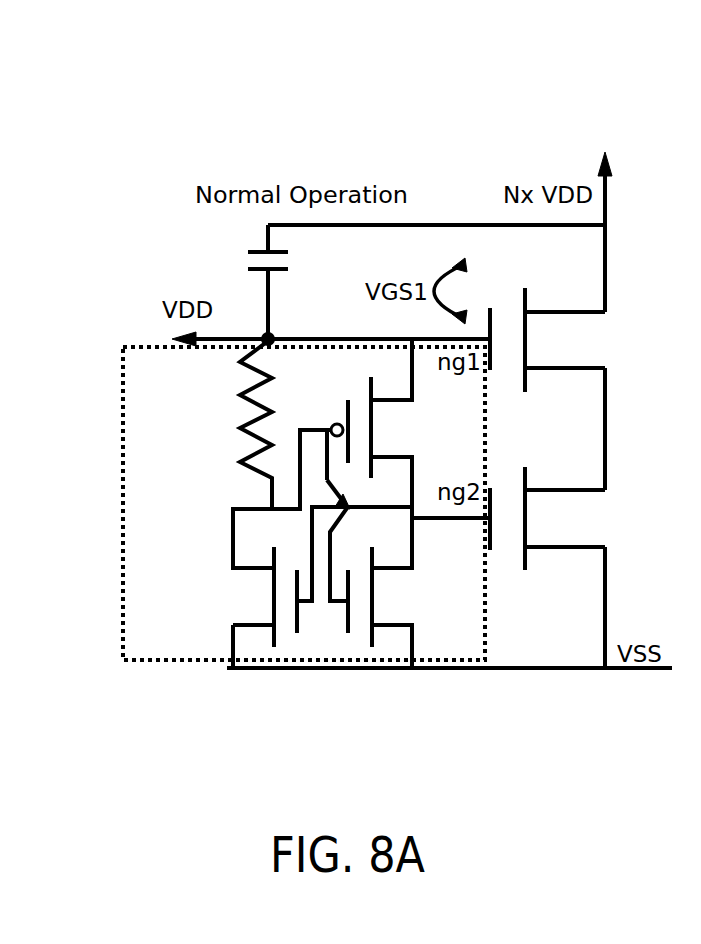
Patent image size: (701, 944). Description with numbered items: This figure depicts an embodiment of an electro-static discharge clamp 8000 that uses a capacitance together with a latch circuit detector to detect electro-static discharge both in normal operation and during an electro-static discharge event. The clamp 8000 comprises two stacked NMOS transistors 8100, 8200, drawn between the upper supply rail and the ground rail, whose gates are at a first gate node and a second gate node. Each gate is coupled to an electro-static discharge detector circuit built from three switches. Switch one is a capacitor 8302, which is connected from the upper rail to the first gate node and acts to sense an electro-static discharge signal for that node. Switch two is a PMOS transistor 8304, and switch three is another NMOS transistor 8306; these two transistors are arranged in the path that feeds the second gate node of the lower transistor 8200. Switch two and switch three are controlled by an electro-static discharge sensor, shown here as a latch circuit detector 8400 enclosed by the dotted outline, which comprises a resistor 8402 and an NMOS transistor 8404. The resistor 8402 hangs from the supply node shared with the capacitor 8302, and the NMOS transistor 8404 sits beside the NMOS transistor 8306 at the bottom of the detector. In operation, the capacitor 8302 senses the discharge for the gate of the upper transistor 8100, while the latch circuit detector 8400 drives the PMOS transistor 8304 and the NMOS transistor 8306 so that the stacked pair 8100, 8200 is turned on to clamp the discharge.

The electro-static discharge clamp 8000 is at (628, 108).
The capacitor 8302 is at (301, 282).
The NMOS transistor 8100 is at (572, 389).
The NMOS transistor 8200 is at (572, 567).
The latch circuit detector 8400 is at (271, 503).
The resistor 8402 is at (222, 426).
The NMOS transistor 8404 is at (293, 587).
The PMOS transistor 8304 is at (369, 454).
The NMOS transistor 8306 is at (384, 589).